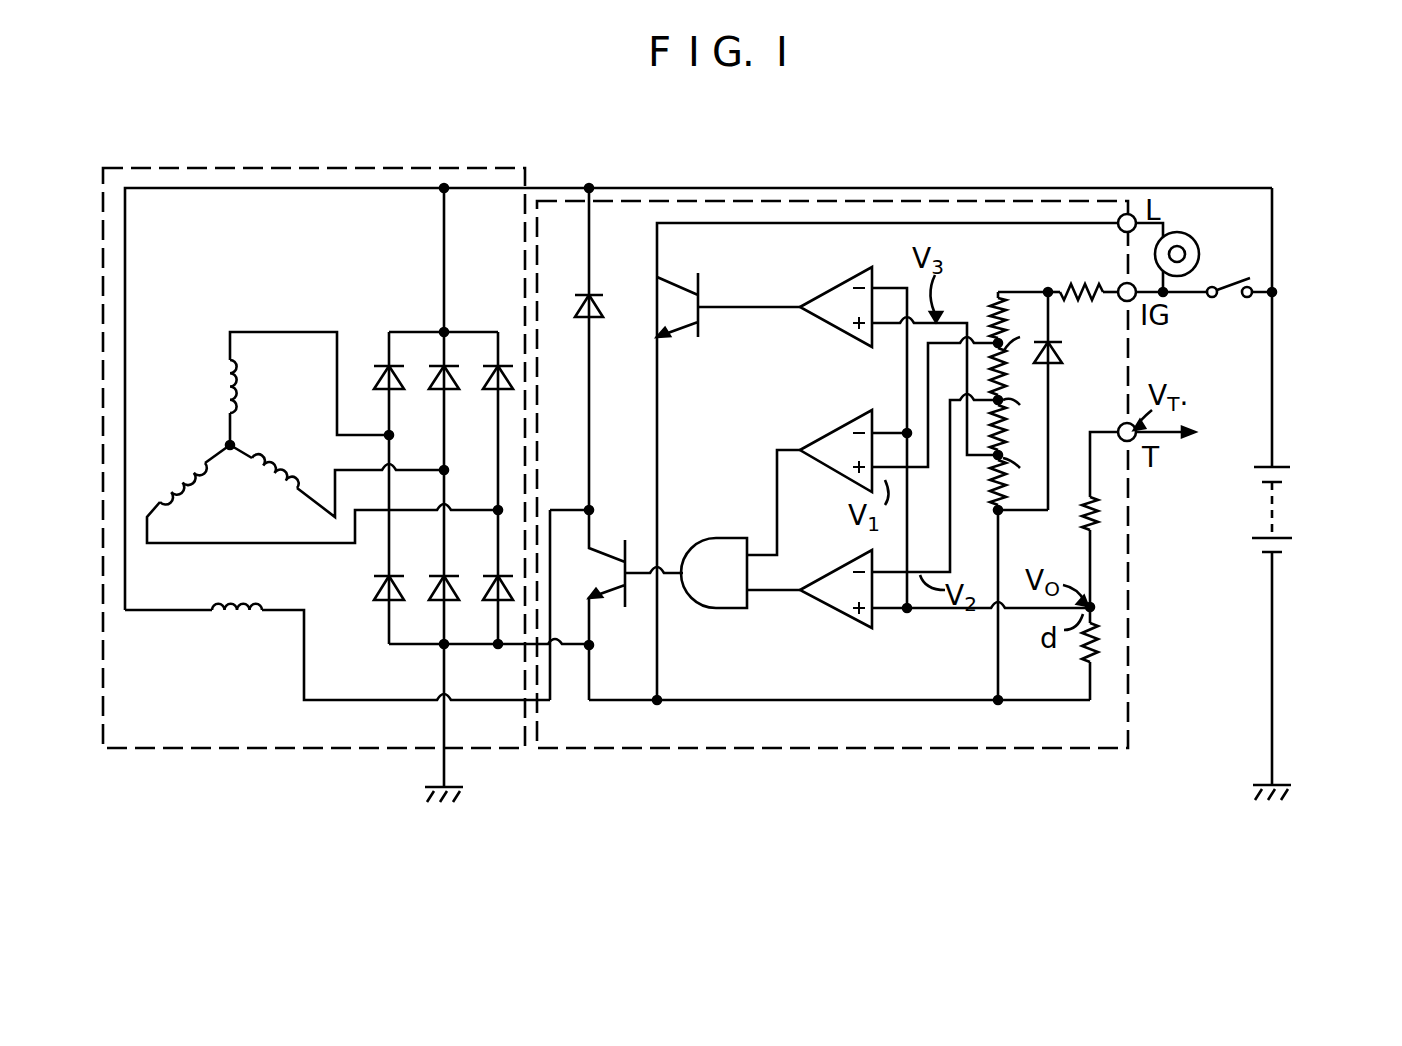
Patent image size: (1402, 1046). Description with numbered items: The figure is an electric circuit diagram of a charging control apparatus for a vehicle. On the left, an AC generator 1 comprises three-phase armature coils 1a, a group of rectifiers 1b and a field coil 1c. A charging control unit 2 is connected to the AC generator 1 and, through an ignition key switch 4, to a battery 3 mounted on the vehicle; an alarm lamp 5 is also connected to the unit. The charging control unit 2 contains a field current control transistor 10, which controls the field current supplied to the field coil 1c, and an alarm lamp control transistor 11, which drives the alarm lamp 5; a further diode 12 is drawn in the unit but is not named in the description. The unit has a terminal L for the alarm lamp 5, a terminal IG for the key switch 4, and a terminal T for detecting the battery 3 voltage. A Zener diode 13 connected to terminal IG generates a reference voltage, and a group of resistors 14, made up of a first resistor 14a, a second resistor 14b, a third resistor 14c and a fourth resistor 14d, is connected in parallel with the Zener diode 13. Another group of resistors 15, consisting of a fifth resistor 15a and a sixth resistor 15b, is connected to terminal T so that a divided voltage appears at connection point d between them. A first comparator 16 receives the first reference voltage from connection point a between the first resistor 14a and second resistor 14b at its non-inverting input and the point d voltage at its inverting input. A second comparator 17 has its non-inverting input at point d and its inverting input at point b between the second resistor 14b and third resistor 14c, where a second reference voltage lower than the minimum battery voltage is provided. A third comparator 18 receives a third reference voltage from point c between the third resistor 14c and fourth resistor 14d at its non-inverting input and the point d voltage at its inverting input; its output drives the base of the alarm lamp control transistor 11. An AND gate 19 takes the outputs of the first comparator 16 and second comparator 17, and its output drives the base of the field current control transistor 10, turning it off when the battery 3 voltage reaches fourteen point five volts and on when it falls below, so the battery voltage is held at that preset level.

The AC generator 1 is at (268, 750).
The three-phase armature coils 1a is at (217, 388).
The group of rectifiers 1b is at (375, 356).
The field coil 1c is at (235, 617).
The charging control unit 2 is at (845, 750).
The battery 3 is at (1294, 478).
The ignition key switch 4 is at (1226, 300).
The alarm lamp 5 is at (1200, 245).
The field current control transistor 10 is at (604, 603).
The alarm lamp control transistor 11 is at (706, 282).
The diode 12 is at (604, 308).
The Zener diode 13 is at (1058, 352).
The group of resistors 14 is at (1034, 465).
The first resistor 14a is at (988, 313).
The second resistor 14b is at (1010, 376).
The third resistor 14c is at (1010, 432).
The fourth resistor 14d is at (991, 488).
The group of resistors 15 is at (1140, 598).
The fifth resistor 15a is at (1099, 515).
The sixth resistor 15b is at (1099, 640).
The first comparator 16 is at (826, 438).
The second comparator 17 is at (825, 610).
The third comparator 18 is at (826, 290).
The AND gate 19 is at (725, 610).